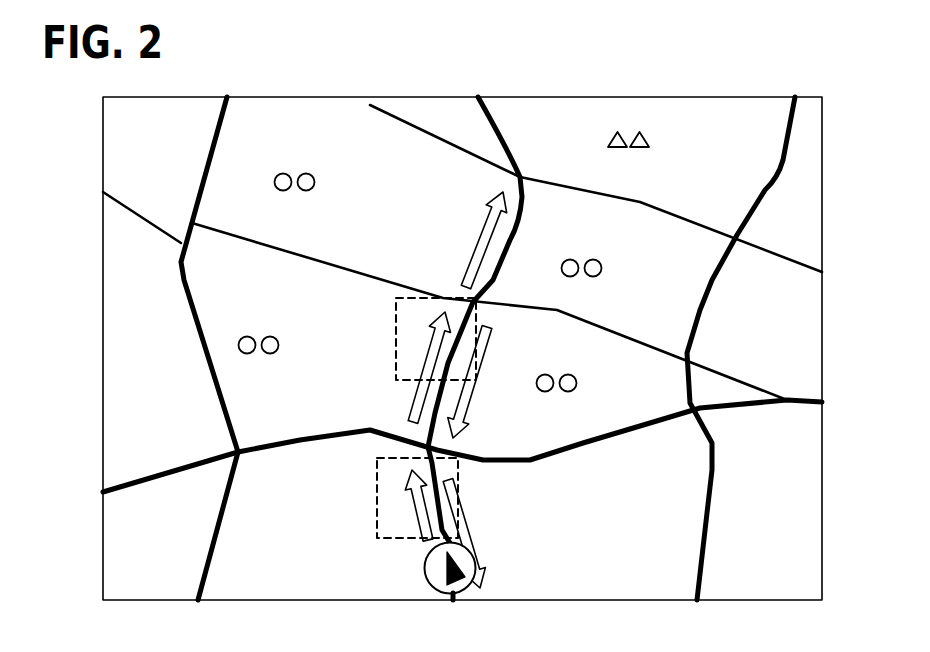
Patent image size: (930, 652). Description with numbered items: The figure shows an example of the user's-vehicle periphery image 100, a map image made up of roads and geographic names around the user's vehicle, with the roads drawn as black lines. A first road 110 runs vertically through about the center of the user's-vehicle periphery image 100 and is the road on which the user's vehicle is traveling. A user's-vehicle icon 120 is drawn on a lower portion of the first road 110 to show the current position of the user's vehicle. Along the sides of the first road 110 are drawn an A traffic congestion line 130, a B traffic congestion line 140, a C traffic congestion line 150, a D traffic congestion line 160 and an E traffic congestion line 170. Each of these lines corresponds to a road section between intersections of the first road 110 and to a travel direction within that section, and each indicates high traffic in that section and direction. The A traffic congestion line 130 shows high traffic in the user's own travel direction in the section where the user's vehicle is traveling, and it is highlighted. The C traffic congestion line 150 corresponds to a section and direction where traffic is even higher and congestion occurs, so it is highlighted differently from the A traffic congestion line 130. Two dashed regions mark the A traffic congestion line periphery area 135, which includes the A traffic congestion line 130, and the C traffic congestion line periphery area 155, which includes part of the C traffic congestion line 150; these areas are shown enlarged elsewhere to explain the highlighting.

The user's-vehicle periphery image 100 is at (442, 96).
The first road 110 is at (512, 147).
The user's-vehicle icon 120 is at (424, 565).
The A traffic congestion line 130 is at (403, 512).
The A traffic congestion line periphery area 135 is at (378, 482).
The B traffic congestion line 140 is at (466, 518).
The C traffic congestion line 150 is at (412, 410).
The C traffic congestion line periphery area 155 is at (396, 322).
The D traffic congestion line 160 is at (467, 427).
The E traffic congestion line 170 is at (481, 227).